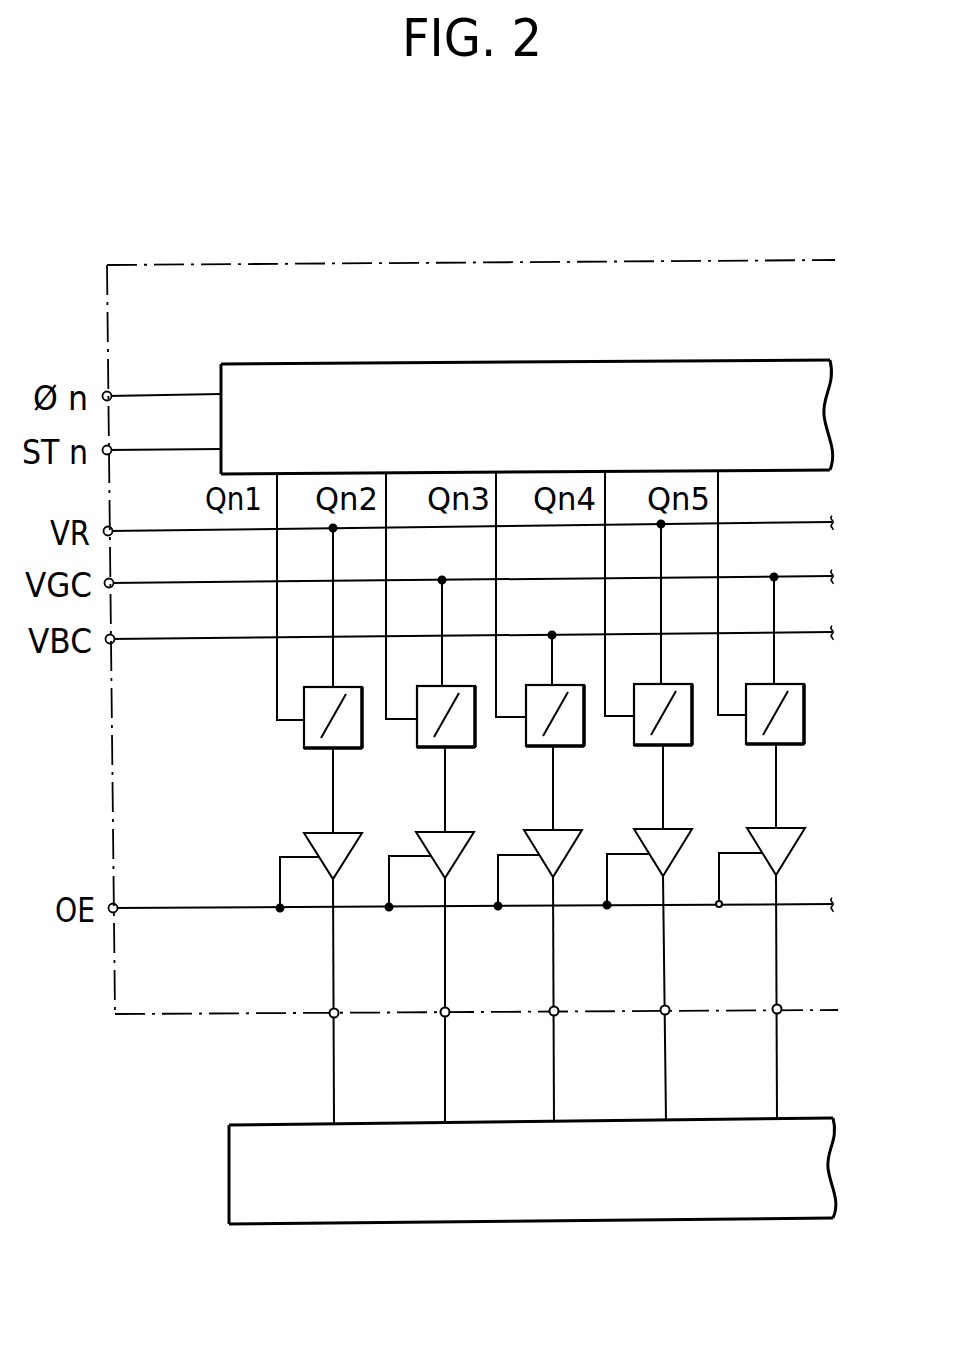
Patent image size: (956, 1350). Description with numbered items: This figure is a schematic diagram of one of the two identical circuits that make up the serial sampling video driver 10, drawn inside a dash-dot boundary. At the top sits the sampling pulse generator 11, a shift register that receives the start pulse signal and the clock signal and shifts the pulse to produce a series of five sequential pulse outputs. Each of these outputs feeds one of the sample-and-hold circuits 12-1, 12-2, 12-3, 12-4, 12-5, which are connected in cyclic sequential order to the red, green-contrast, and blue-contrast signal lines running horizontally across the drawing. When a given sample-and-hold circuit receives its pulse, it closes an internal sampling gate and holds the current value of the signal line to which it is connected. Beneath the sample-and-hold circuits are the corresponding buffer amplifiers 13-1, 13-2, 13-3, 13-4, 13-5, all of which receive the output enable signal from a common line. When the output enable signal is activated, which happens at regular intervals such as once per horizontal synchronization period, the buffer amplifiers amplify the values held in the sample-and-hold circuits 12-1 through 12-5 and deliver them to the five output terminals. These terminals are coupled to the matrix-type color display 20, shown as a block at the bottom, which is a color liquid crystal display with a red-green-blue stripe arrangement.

The serial sampling video driver 10 is at (758, 260).
The sampling pulse generator 11 is at (786, 358).
The sample-and-hold circuit 12-1 is at (303, 739).
The sample-and-hold circuit 12-2 is at (416, 738).
The sample-and-hold circuit 12-3 is at (525, 737).
The sample-and-hold circuit 12-4 is at (633, 736).
The sample-and-hold circuit 12-5 is at (745, 735).
The buffer amplifier 13-1 is at (307, 840).
The buffer amplifier 13-2 is at (419, 839).
The buffer amplifier 13-3 is at (527, 837).
The buffer amplifier 13-4 is at (637, 836).
The buffer amplifier 13-5 is at (750, 835).
The color display 20 is at (229, 1165).